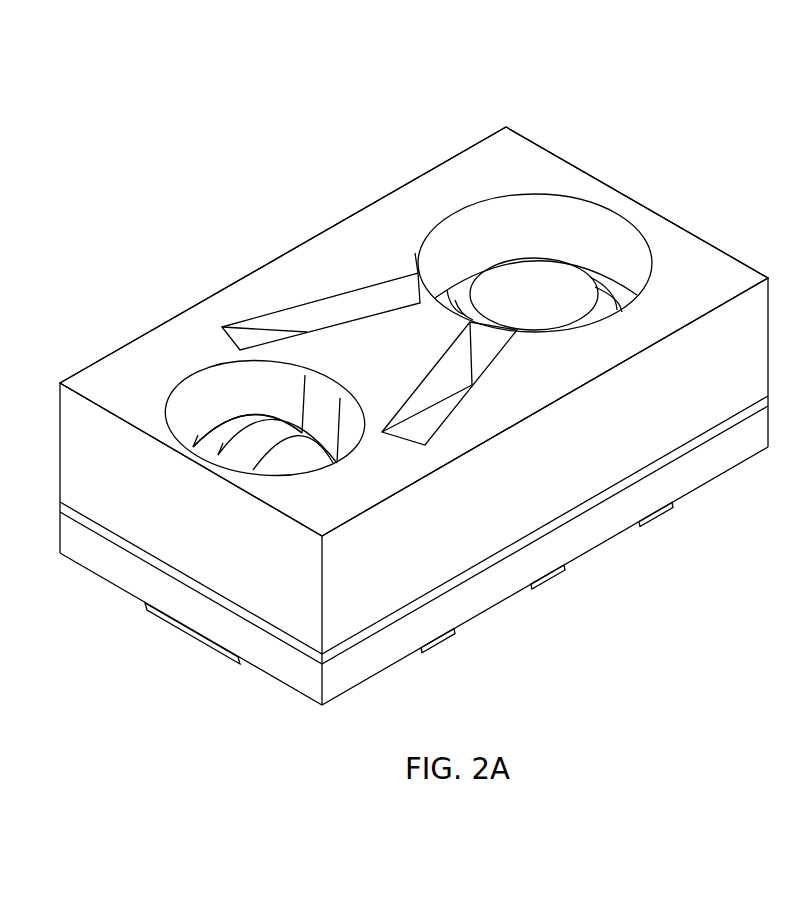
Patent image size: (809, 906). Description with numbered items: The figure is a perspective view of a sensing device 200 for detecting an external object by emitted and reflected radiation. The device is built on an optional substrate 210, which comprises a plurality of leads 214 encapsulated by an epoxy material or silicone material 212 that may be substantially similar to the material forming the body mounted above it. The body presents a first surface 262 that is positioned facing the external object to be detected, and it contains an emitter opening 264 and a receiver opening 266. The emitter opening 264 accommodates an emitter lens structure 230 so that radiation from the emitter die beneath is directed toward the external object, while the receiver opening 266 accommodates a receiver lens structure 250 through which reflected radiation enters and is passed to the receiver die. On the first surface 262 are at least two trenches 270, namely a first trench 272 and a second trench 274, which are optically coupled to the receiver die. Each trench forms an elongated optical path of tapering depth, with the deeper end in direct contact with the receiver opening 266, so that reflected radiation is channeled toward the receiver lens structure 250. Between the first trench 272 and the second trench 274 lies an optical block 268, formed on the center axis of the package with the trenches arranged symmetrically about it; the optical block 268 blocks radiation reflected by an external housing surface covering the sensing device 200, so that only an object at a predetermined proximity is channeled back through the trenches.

The sensing device 200 is at (688, 67).
The substrate 210 is at (689, 543).
The epoxy material or silicone material 212 is at (577, 528).
The leads 214 is at (553, 580).
The emitter lens structure 230 is at (228, 427).
The receiver lens structure 250 is at (552, 287).
The first surface 262 is at (267, 279).
The emitter opening 264 is at (220, 393).
The receiver opening 266 is at (477, 227).
The optical block 268 is at (404, 363).
The at least two trenches 270 is at (232, 82).
The first trench 272 is at (360, 303).
The second trench 274 is at (431, 385).